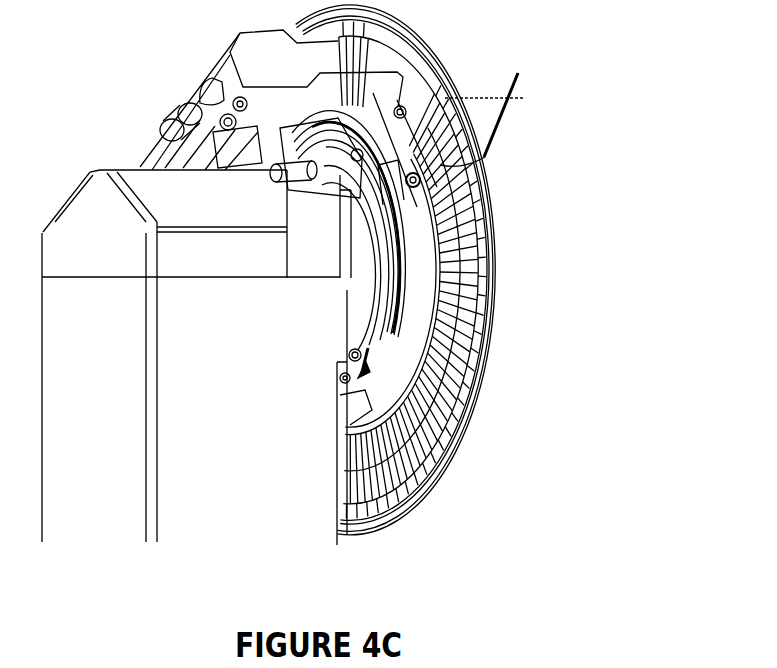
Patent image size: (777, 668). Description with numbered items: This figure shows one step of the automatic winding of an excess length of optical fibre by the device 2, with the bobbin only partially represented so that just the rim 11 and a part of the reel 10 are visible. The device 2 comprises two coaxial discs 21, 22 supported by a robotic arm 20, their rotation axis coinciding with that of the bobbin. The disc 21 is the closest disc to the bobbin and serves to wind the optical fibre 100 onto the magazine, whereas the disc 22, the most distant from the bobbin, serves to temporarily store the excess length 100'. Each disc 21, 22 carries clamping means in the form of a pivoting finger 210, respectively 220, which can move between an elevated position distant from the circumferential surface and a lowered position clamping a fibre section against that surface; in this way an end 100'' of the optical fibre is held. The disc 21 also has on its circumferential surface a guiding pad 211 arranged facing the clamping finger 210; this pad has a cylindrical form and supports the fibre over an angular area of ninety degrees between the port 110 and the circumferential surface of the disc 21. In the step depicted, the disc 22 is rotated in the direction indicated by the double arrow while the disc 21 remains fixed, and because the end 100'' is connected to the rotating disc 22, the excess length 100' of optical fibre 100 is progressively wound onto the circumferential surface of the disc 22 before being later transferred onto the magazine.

The device for the automated winding 2 is at (110, 22).
The reel 10 is at (462, 447).
The rim 11 is at (440, 500).
The robotic arm 20 is at (82, 193).
The disc 21 is at (470, 262).
The disc 22 is at (440, 323).
The optical fibre 100 is at (419, 114).
The excess length of optical fibre 100' is at (428, 248).
The end of the optical fibre 100'' is at (296, 391).
The port 110 is at (445, 150).
The clamping finger 210 is at (415, 152).
The guiding pad 211 is at (473, 207).
The clamping finger 220 is at (347, 535).